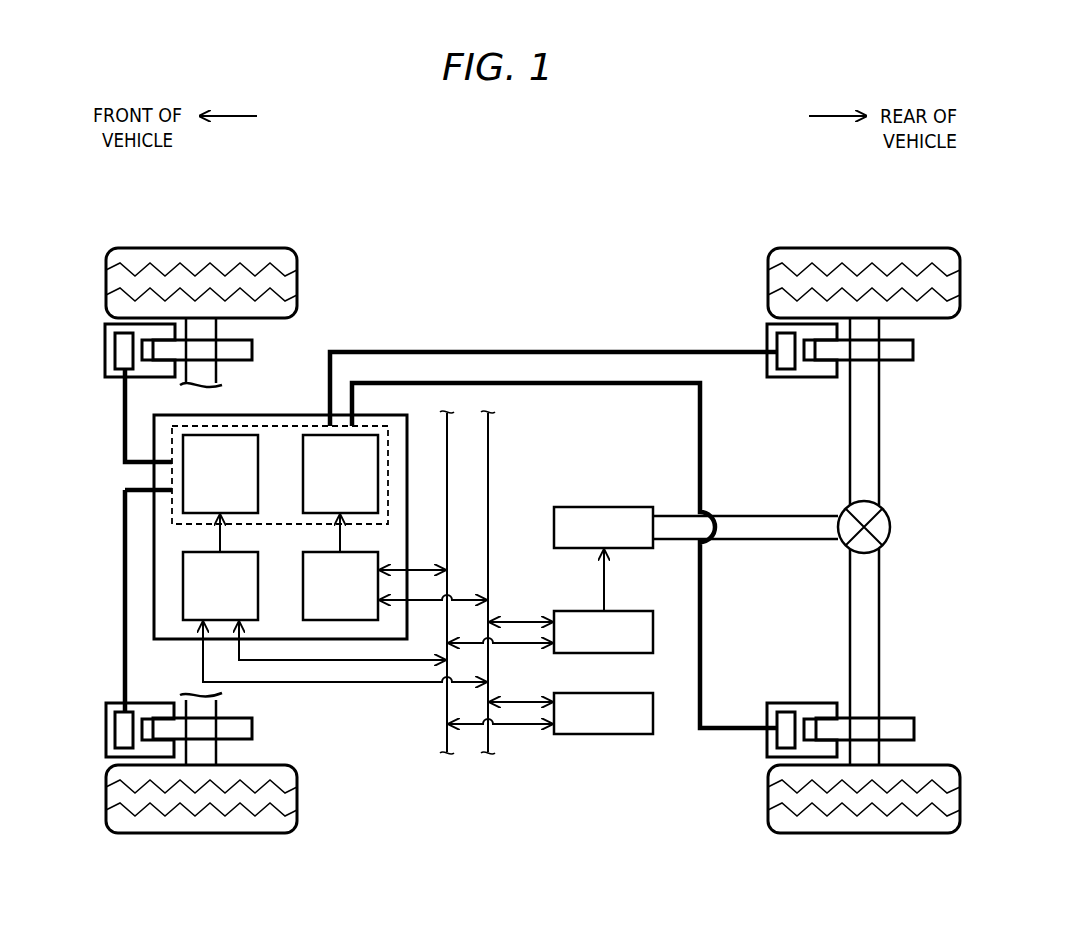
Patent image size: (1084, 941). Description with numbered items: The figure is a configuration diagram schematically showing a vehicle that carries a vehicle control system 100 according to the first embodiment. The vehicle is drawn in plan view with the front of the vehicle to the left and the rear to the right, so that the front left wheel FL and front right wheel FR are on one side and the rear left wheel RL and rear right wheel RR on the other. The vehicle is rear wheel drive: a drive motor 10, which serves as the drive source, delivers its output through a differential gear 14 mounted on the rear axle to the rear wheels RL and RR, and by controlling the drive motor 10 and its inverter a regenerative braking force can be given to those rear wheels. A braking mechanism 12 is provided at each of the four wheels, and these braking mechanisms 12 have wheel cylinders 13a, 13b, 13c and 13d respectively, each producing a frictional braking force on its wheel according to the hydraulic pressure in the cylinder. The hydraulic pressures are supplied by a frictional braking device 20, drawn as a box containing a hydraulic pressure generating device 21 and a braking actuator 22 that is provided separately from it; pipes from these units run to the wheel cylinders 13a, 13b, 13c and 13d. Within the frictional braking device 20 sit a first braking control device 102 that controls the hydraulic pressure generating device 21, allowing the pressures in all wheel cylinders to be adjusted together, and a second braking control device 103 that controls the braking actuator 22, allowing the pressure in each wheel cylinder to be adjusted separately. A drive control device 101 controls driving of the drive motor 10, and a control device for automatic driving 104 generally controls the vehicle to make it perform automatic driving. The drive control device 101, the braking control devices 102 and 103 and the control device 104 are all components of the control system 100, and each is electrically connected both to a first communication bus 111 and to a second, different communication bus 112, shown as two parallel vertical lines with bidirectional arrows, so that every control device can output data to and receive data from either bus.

The drive motor 10 is at (598, 507).
The braking mechanism 12 is at (105, 369).
The wheel cylinder 13a is at (115, 727).
The wheel cylinder 13b is at (115, 350).
The wheel cylinder 13c is at (786, 712).
The wheel cylinder 13d is at (786, 369).
The differential gear 14 is at (890, 527).
The frictional braking device 20 is at (236, 505).
The hydraulic pressure generating device 21 is at (340, 474).
The braking actuator 22 is at (220, 474).
The vehicle control system 100 is at (501, 545).
The drive control device 101 is at (617, 611).
The first braking control device 102 is at (322, 552).
The second braking control device 103 is at (183, 571).
The control device for automatic driving 104 is at (617, 693).
The first communication bus 111 is at (449, 432).
The second communication bus 112 is at (490, 466).
The front right wheel FR is at (190, 248).
The front left wheel FL is at (188, 833).
The rear right wheel RR is at (850, 248).
The rear left wheel RL is at (850, 833).